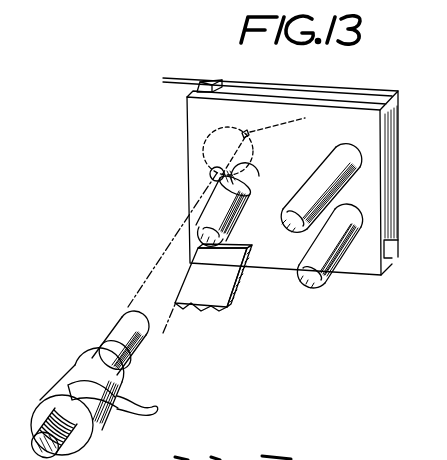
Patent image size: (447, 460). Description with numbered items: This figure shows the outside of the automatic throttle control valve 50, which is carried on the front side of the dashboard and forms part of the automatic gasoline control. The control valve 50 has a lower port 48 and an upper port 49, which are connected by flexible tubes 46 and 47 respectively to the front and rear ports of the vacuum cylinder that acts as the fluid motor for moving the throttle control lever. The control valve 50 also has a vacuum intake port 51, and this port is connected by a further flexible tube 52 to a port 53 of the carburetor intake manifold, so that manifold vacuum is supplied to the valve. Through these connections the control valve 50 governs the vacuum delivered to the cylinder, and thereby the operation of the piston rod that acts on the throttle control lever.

The flexible tube 46 is at (320, 283).
The flexible tube 47 is at (292, 232).
The lower port 48 is at (353, 228).
The upper port 49 is at (340, 152).
The control valve 50 is at (285, 103).
The vacuum intake port 51 is at (243, 178).
The flexible tube 52 is at (210, 199).
The port 53 is at (92, 372).